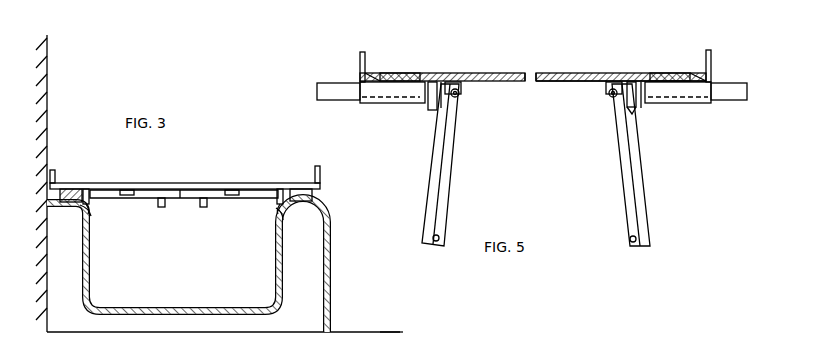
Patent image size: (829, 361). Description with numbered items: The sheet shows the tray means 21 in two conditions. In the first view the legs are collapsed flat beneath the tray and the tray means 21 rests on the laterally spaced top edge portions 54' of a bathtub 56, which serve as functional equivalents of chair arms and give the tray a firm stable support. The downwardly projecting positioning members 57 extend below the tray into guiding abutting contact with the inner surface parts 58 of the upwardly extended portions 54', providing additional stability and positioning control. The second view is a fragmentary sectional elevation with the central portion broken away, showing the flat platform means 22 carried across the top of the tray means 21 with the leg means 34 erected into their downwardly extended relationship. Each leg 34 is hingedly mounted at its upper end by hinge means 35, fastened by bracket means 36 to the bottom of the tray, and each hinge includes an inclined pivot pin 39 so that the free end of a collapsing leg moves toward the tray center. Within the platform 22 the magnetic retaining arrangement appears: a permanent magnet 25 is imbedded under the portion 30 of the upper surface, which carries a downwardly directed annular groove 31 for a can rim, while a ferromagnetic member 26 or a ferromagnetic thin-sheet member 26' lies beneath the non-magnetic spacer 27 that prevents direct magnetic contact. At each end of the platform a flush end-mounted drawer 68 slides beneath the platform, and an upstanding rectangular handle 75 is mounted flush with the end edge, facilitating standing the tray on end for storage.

In FIG. 3, the tray means 21 is at (252, 184).
In FIG. 5, the tray means 21 is at (436, 360).
In FIG. 5, the platform means 22 is at (546, 72).
In FIG. 5, the permanent magnet 25 is at (680, 85).
In FIG. 5, the ferromagnetic member 26 is at (442, 91).
In FIG. 5, the ferromagnetic thin-sheet member 26' is at (621, 65).
In FIG. 5, the non-magnetic spacer means 27 is at (590, 73).
In FIG. 5, the platform portion with imbedded magnet 30 is at (397, 69).
In FIG. 5, the annular groove means 31 is at (397, 73).
In FIG. 5, the leg means 34 is at (462, 167).
In FIG. 5, the hinge means 35 is at (612, 99).
In FIG. 5, the bracket means 36 is at (467, 80).
In FIG. 5, the pivot pin 39 is at (461, 98).
In FIG. 3, the top edge portions of bathtub 54' is at (202, 178).
In FIG. 3, the bathtub 56 is at (335, 231).
In FIG. 3, the positioning members 57 is at (90, 208).
In FIG. 5, the positioning members 57 is at (430, 106).
In FIG. 3, the inner surface parts 58 is at (83, 214).
In FIG. 5, the end-mounted drawer means 68 is at (345, 74).
In FIG. 5, the handle means 75 is at (362, 46).